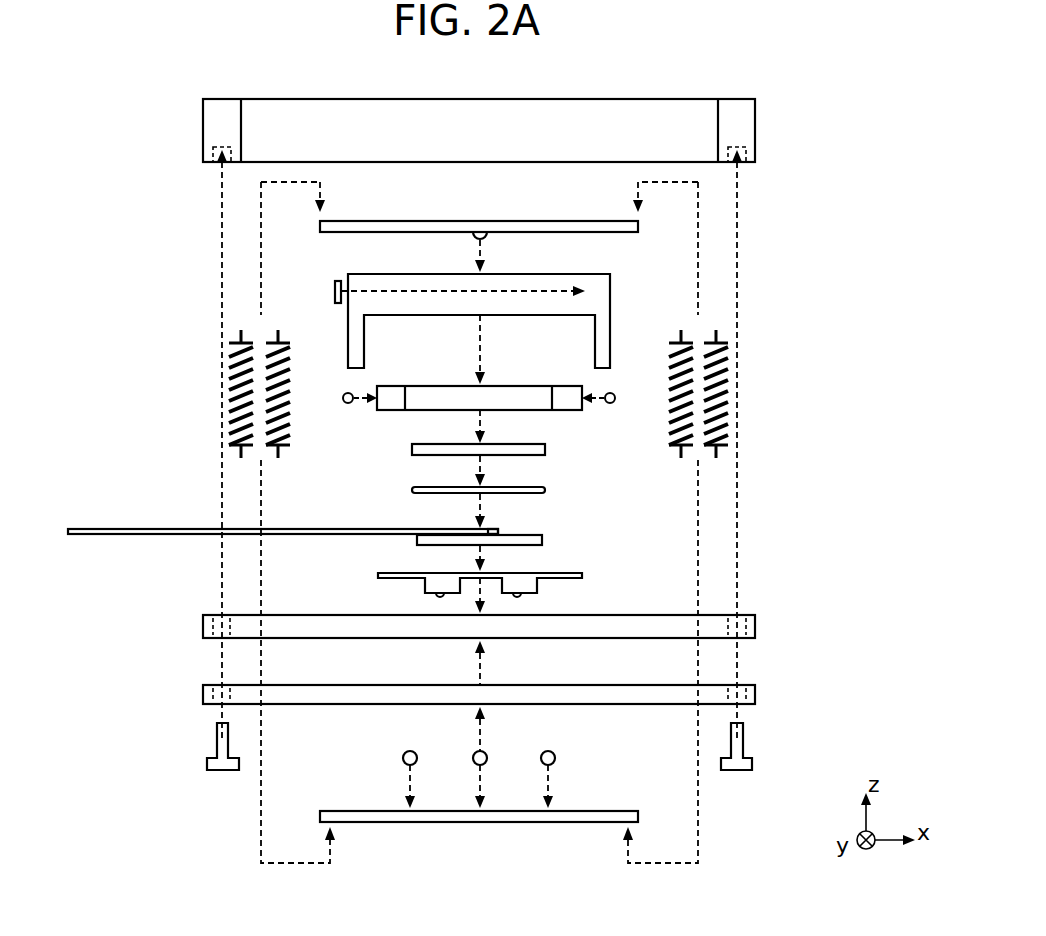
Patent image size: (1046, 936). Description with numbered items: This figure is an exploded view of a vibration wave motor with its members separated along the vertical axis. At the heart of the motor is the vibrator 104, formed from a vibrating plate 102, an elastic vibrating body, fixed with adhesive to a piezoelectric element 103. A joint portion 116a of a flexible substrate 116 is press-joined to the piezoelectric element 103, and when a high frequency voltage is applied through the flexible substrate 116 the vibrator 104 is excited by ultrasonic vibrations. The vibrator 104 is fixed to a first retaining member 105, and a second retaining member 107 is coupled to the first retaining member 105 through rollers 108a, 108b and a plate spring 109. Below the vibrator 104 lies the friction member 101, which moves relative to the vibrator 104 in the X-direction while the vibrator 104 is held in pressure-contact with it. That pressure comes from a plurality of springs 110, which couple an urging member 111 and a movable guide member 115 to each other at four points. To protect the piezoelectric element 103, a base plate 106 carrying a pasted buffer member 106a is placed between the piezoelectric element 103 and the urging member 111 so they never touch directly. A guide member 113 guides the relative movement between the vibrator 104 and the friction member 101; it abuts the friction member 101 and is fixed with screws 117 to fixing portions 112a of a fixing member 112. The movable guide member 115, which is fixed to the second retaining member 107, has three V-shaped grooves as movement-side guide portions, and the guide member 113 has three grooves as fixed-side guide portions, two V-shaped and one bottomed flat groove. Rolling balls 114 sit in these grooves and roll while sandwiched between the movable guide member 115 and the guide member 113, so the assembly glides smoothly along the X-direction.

The friction member 101 is at (755, 625).
The vibrating plate 102 is at (582, 576).
The piezoelectric element 103 is at (542, 540).
The vibrator 104 is at (538, 569).
The first retaining member 105 is at (391, 411).
The base plate 106 is at (545, 449).
The buffer member 106a is at (545, 490).
The second retaining member 107 is at (612, 287).
The roller 108a is at (616, 401).
The roller 108b is at (344, 402).
The plate spring 109 is at (334, 291).
The springs 110 is at (312, 348).
The urging member 111 is at (552, 220).
The fixing member 112 is at (680, 100).
The fixing portions 112a is at (213, 164).
The guide member 113 is at (590, 696).
The rolling balls 114 is at (402, 758).
The movable guide member 115 is at (638, 811).
The flexible substrate 116 is at (318, 528).
The joint portion 116a is at (494, 526).
The screws 117 is at (221, 772).